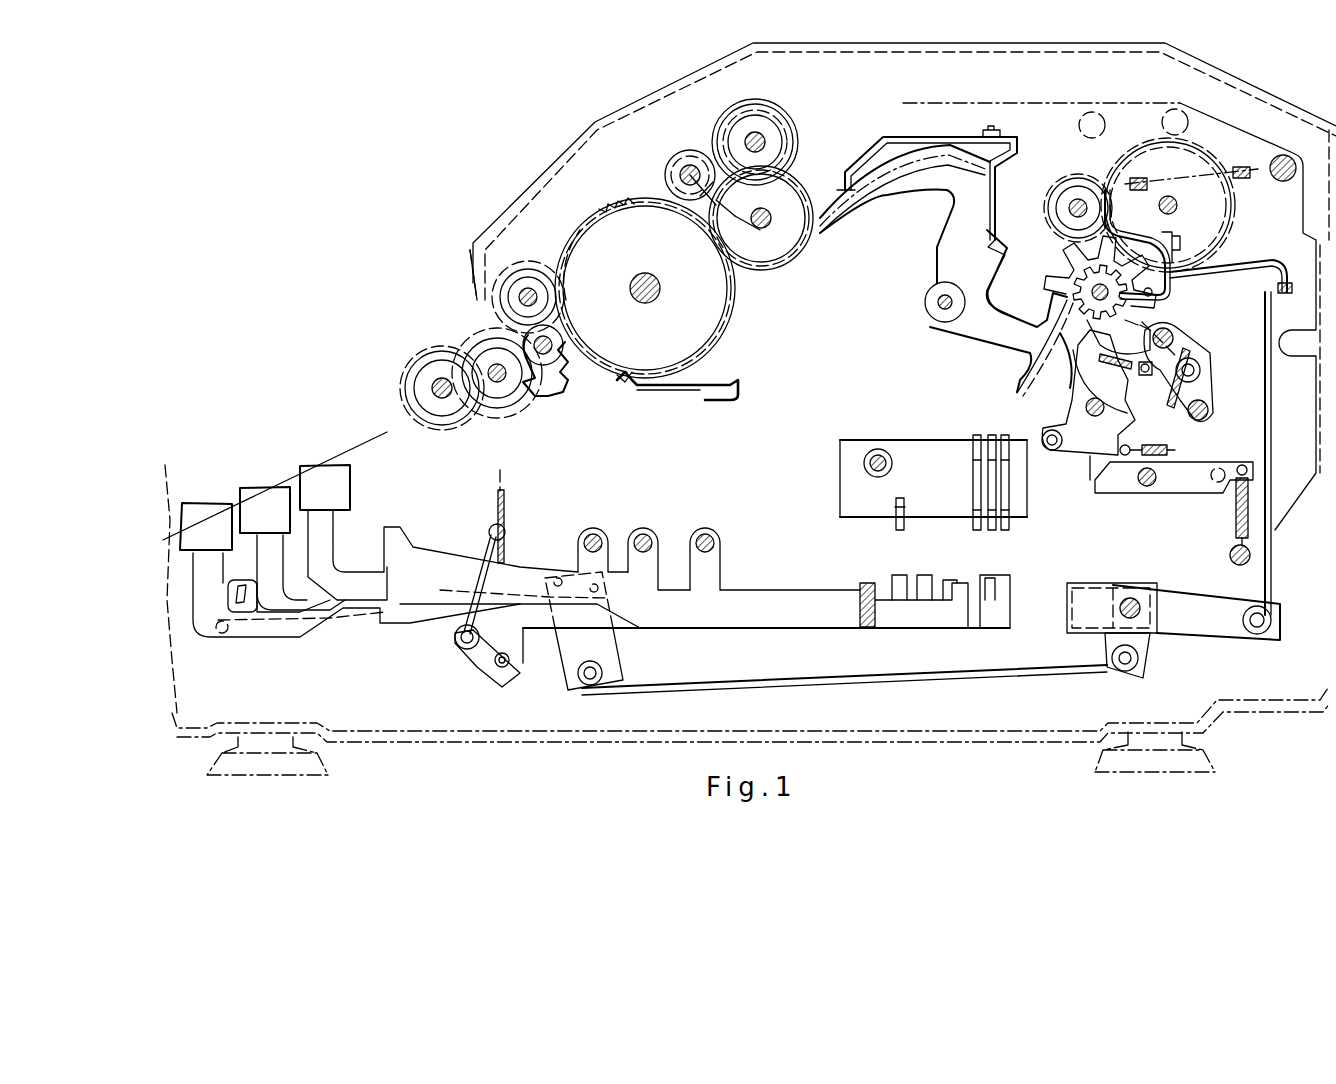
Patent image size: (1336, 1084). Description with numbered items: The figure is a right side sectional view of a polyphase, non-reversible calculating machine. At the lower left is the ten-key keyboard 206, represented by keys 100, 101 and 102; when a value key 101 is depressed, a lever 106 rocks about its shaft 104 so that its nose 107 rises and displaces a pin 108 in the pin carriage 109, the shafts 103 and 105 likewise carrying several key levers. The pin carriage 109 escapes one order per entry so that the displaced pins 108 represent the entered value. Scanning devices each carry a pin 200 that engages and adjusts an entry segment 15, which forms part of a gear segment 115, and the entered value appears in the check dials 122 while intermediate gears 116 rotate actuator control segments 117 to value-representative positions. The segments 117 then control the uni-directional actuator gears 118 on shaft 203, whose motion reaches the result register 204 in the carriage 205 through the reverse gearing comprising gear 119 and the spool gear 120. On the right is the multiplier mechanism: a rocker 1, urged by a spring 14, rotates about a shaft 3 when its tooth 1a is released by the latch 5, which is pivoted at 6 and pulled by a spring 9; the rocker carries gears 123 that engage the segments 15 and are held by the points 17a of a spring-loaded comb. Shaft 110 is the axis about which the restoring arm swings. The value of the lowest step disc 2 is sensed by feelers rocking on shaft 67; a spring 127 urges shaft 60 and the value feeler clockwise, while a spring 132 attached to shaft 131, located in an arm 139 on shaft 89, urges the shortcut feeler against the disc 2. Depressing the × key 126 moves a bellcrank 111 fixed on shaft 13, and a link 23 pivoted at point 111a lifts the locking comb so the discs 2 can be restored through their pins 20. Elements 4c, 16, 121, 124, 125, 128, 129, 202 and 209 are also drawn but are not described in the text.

The rocker 1 is at (1078, 450).
The tooth of rocker 1a is at (1089, 482).
The step disc 2 is at (1075, 253).
The shaft 3 is at (1095, 417).
The wheel 4c is at (1180, 205).
The latch 5 is at (1197, 483).
The pivot 6 is at (1147, 490).
The spring 9 is at (1235, 522).
The shaft 13 is at (1130, 597).
The spring 14 is at (1147, 439).
The entry segment 15 is at (980, 335).
The link bar 16 is at (1241, 261).
The points of spring loaded comb 17a is at (1168, 284).
The pins on step discs 20 is at (1152, 294).
The link 23 is at (1272, 408).
The shaft 60 is at (1165, 399).
The shaft 67 is at (1172, 332).
The shaft 89 is at (1209, 412).
The key 100 is at (210, 520).
The value key 101 is at (266, 500).
The key 102 is at (315, 478).
The shaft 103 is at (594, 534).
The shaft 104 is at (646, 534).
The shaft 105 is at (708, 534).
The lever 106 is at (780, 605).
The nose 107 is at (995, 580).
The pin 108 is at (1004, 481).
The pin carriage 109 is at (875, 440).
The shaft 110 is at (938, 302).
The bellcrank 111 is at (1203, 622).
The point 111a is at (1271, 620).
The gear segment 115 is at (908, 184).
The intermediate gears 116 is at (784, 243).
The actuator control segment 117 is at (738, 320).
The actuator gear 118 is at (590, 240).
The gear 119 is at (556, 337).
The spool gear 120 is at (521, 278).
The hub 121 is at (770, 125).
The check dials 122 is at (793, 140).
The gears 123 is at (1141, 313).
The lever 124 is at (751, 686).
The link 125 is at (572, 668).
The × key 126 is at (233, 500).
The spring 127 is at (1090, 377).
The pawl 128 is at (1132, 352).
The gear 129 is at (405, 383).
The shaft 131 is at (1200, 370).
The spring 132 is at (1168, 424).
The arm 139 is at (1205, 390).
The pin 200 is at (994, 245).
The arm 202 is at (1016, 396).
The shaft 203 is at (660, 288).
The result register 204 is at (481, 360).
The carriage 205 is at (445, 316).
The ten-key keyboard 206 is at (247, 450).
The arm 209 is at (898, 137).